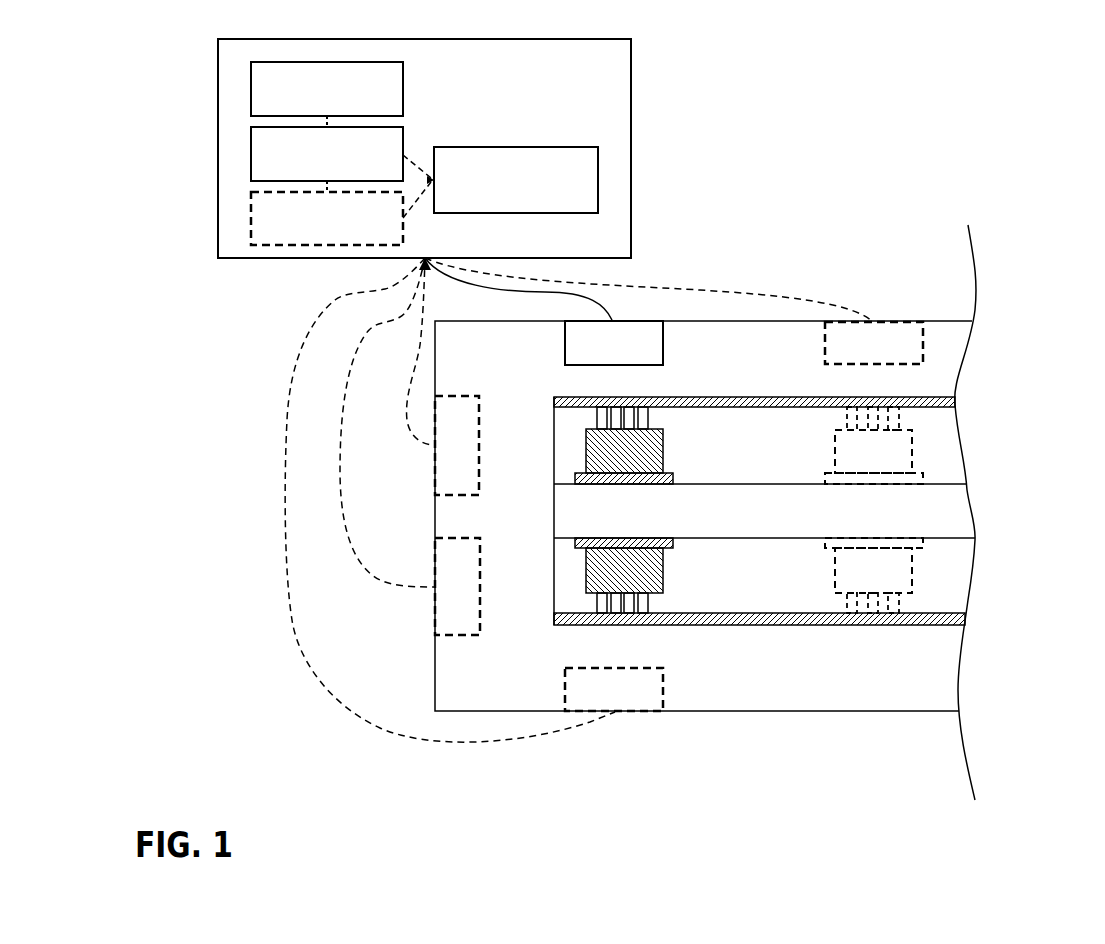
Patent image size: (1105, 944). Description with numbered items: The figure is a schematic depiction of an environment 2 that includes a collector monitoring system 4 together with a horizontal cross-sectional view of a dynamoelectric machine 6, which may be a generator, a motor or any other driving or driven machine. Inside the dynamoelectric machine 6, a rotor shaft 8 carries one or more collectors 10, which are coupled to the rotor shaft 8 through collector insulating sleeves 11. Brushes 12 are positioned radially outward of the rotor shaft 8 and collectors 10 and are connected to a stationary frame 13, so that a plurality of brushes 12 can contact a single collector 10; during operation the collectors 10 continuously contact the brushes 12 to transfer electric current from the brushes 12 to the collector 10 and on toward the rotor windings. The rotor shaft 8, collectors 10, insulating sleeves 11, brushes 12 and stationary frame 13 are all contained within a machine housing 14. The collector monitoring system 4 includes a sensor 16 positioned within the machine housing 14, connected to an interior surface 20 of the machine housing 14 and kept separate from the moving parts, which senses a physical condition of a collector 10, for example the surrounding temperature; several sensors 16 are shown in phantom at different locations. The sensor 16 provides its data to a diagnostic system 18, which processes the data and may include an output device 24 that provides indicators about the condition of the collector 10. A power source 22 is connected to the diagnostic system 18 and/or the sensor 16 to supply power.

The environment 2 is at (740, 158).
The collector monitoring system 4 is at (519, 96).
The dynamoelectric machine 6 is at (901, 278).
The rotor shaft 8 is at (814, 526).
The collector 10 is at (847, 453).
The collector insulating sleeve 11 is at (575, 480).
The brush 12 is at (847, 420).
The stationary frame 13 is at (955, 402).
The machine housing 14 is at (752, 365).
The sensor 16 is at (882, 353).
The diagnostic system 18 is at (361, 173).
The interior surface 20 is at (521, 322).
The power source 22 is at (545, 205).
The output device 24 is at (363, 109).